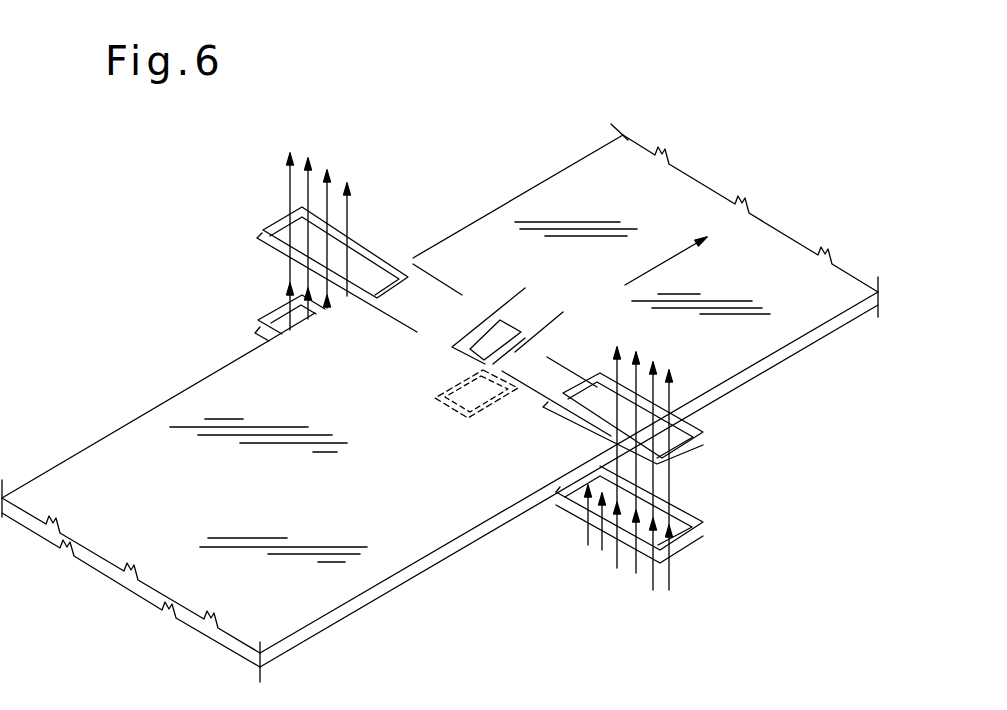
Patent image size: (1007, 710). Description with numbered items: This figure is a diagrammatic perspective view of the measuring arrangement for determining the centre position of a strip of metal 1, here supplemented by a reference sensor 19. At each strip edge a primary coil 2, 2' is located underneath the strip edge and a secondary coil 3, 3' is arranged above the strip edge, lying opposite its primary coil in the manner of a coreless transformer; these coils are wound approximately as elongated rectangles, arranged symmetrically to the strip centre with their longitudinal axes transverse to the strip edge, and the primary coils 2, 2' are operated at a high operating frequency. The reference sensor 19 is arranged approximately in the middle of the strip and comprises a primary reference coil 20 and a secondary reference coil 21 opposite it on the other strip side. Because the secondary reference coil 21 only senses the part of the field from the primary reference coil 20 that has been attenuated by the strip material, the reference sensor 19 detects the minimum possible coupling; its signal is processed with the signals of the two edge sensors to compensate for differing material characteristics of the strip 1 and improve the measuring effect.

The strip of metal 1 is at (315, 600).
The primary coil 2 is at (653, 548).
The primary coil 2' is at (255, 313).
The secondary coil 3 is at (663, 468).
The secondary coil 3' is at (293, 241).
The reference sensor 19 is at (426, 370).
The primary reference coil 20 is at (497, 412).
The secondary reference coil 21 is at (500, 305).